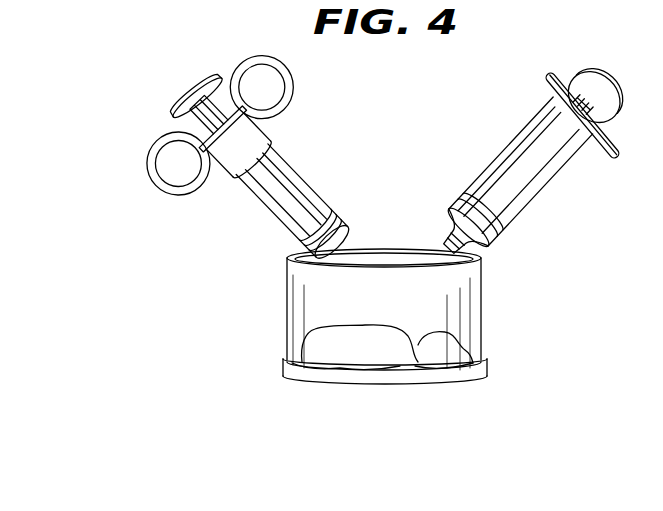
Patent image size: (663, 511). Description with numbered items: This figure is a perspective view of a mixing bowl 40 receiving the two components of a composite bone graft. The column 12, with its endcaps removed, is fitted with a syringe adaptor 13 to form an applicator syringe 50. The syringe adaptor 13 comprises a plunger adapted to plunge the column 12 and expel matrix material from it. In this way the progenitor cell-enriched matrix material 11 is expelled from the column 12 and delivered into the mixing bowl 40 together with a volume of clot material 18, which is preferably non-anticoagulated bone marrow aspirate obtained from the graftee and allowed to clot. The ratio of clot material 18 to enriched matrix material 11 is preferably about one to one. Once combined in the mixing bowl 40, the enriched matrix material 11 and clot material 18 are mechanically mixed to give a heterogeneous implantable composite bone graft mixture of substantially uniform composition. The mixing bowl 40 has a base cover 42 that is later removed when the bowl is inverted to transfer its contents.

The applicator syringe 50 is at (93, 73).
The syringe adaptor 13 is at (143, 73).
The column 12 is at (278, 213).
The progenitor cell-enriched matrix material 11 is at (328, 332).
The clot material 18 is at (443, 360).
The mixing bowl 40 is at (499, 255).
The base cover 42 is at (462, 380).